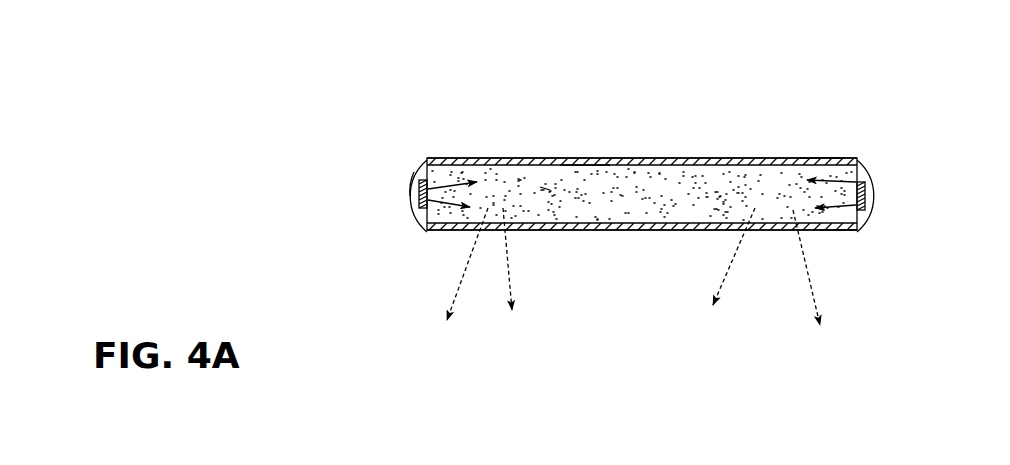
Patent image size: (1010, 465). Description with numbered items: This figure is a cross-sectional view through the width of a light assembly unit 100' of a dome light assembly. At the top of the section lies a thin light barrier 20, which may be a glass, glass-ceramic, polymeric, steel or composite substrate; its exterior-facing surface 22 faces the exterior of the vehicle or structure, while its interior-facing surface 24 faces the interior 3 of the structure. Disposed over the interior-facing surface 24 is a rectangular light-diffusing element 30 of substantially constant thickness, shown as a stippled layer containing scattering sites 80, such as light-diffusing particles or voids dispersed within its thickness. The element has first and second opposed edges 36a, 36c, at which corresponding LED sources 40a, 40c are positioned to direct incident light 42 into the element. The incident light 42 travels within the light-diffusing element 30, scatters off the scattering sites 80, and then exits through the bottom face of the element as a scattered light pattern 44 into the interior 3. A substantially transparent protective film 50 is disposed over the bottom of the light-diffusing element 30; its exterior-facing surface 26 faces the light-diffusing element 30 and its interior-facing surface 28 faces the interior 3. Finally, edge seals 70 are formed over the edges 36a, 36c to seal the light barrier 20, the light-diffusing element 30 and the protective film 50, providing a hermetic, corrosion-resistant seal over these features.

The light assembly unit 100' is at (642, 117).
The light barrier 20 is at (843, 158).
The exterior-facing surface 22 is at (683, 157).
The interior-facing surface 24 is at (582, 170).
The exterior-facing surface 26 is at (693, 215).
The interior-facing surface 28 is at (662, 234).
The light-diffusing element 30 is at (822, 157).
The first edge 36a is at (868, 158).
The second edge 36c is at (423, 158).
The LED source 40a is at (866, 200).
The LED source 40c is at (419, 200).
The incident light 42 is at (430, 189).
The scattered light pattern 44 is at (472, 243).
The protective film 50 is at (848, 231).
The edge seal 70 is at (422, 177).
The scattering sites 80 is at (545, 190).
The interior 3 is at (745, 312).